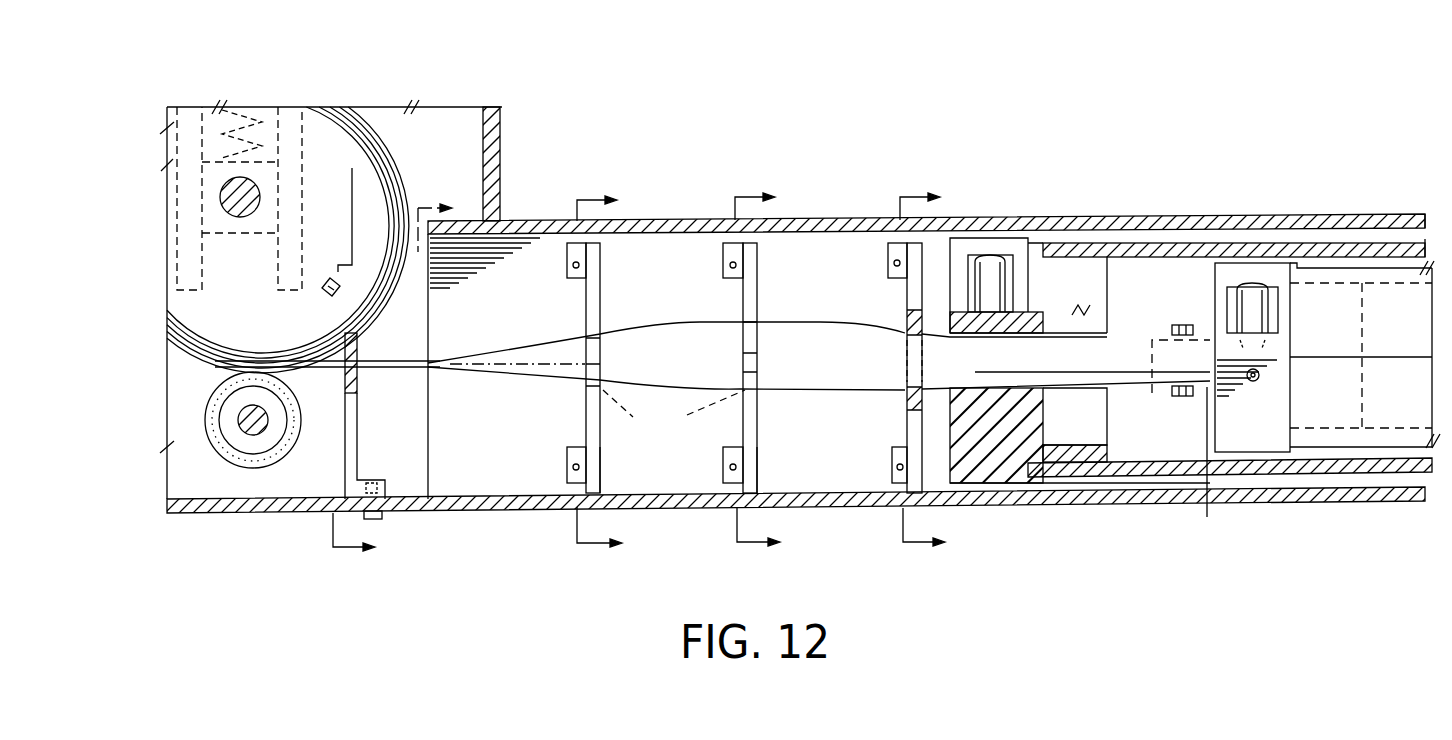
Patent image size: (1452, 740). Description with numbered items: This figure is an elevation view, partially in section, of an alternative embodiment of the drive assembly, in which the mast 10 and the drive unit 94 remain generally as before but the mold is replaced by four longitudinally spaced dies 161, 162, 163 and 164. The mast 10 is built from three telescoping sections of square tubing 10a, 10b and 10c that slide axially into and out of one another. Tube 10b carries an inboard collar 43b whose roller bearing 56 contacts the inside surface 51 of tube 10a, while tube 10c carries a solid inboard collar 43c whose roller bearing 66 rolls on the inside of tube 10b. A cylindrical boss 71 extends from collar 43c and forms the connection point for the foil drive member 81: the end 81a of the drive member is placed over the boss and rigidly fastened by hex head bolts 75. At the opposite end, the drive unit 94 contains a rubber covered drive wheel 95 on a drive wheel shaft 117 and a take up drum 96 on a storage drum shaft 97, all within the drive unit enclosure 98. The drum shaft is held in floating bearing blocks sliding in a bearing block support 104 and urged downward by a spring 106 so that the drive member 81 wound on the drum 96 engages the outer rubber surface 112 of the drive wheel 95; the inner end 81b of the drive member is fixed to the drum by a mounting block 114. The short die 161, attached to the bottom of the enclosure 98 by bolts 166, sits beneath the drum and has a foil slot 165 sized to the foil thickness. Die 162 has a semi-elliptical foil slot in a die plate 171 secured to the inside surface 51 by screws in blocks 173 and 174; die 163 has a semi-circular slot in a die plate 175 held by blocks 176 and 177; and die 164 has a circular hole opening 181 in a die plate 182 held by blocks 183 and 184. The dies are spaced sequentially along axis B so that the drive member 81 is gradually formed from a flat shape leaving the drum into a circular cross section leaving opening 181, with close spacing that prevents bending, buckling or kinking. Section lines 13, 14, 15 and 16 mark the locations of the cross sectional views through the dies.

The mast 10 is at (1160, 190).
The outer mast tube 10a is at (1078, 220).
The intermediate mast tube 10b is at (1308, 247).
The inner mast tube 10c is at (1393, 268).
The section line 13 is at (395, 382).
The section line 14 is at (600, 381).
The section line 15 is at (755, 381).
The section line 16 is at (926, 381).
The inboard collar 43b is at (970, 245).
The inboard collar 43c is at (1245, 272).
The inside surface 51 is at (662, 238).
The roller bearing 56 is at (991, 305).
The roller bearing 66 is at (1262, 298).
The cylindrical boss 71 is at (1160, 383).
The hex head bolts 75 is at (1173, 323).
The drive member 81 is at (332, 372).
The drive member end 81a is at (1213, 470).
The inner end of drive member 81b is at (338, 205).
The drive unit 94 is at (437, 92).
The drive wheel 95 is at (227, 460).
The take up drum 96 is at (192, 310).
The storage drum shaft 97 is at (225, 200).
The drive unit enclosure 98 is at (298, 508).
The bearing block support 104 is at (160, 125).
The spring 106 is at (253, 117).
The outer rubber surface 112 is at (212, 417).
The mounting block 114 is at (335, 275).
The drive wheel shaft 117 is at (245, 423).
The die 161 is at (342, 485).
The die 162 is at (603, 467).
The die 163 is at (760, 470).
The die 164 is at (933, 473).
The foil slot 165 is at (358, 350).
The bolts 166 is at (377, 517).
The die plate 171 is at (618, 288).
The block 173 is at (570, 457).
The block 174 is at (567, 255).
The die plate 175 is at (752, 415).
The block 176 is at (725, 468).
The block 177 is at (723, 278).
The circular hole opening 181 is at (905, 383).
The die plate 182 is at (905, 295).
The block 183 is at (893, 460).
The block 184 is at (890, 268).
The axis B is at (452, 372).